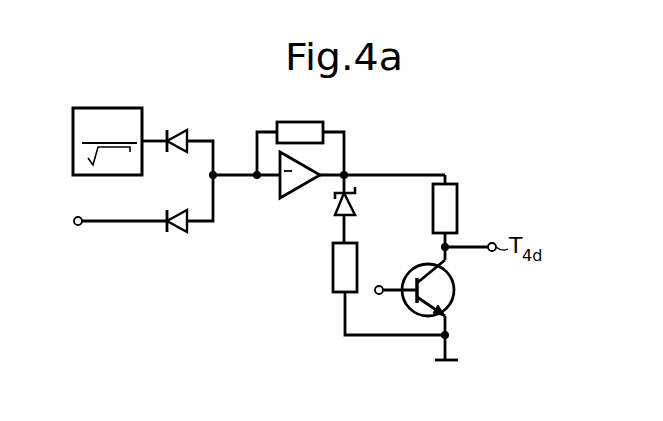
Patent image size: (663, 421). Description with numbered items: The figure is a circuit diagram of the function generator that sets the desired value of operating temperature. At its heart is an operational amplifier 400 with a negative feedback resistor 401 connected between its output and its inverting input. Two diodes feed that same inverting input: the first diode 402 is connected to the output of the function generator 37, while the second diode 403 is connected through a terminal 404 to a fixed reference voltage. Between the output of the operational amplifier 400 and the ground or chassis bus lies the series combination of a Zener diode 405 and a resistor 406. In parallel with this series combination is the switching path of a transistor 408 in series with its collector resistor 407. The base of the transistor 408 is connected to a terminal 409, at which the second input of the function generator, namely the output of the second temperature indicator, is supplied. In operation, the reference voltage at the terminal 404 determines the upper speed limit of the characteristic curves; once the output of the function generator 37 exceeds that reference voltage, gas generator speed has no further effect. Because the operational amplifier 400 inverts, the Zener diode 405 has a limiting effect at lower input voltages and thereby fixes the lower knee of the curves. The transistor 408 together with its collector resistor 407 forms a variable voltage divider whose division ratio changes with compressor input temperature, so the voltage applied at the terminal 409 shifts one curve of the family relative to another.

The function generator 37 is at (117, 113).
The operational amplifier 400 is at (300, 190).
The negative feedback resistor 401 is at (297, 130).
The first diode 402 is at (178, 131).
The second diode 403 is at (178, 231).
The terminal 404 is at (77, 237).
The Zener diode 405 is at (353, 201).
The resistor 406 is at (333, 270).
The collector resistor 407 is at (450, 202).
The transistor 408 is at (447, 290).
The terminal 409 is at (379, 294).